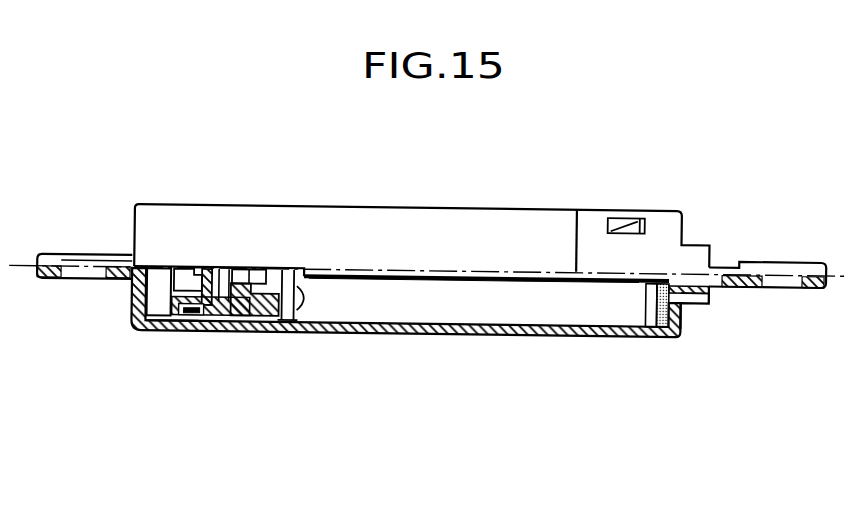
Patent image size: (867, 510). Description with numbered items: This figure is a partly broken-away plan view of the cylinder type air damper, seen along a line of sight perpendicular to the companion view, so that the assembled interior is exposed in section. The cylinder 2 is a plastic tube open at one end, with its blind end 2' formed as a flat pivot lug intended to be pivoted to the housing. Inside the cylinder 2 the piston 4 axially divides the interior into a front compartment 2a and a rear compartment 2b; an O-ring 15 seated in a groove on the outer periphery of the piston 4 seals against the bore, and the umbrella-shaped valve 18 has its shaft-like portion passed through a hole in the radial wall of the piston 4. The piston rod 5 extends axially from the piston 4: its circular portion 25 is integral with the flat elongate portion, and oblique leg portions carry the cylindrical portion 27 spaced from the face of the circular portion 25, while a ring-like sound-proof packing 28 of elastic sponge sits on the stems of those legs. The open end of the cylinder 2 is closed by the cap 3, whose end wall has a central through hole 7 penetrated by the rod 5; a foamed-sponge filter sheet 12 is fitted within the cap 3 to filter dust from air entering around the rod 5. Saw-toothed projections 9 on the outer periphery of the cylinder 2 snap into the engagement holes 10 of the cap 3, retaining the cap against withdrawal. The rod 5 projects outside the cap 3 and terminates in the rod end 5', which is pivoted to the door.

The cylinder 2 is at (421, 243).
The blind end 2' is at (76, 237).
The front compartment 2a is at (163, 330).
The rear compartment 2b is at (374, 297).
The cap 3 is at (682, 321).
The piston 4 is at (207, 319).
The piston rod 5 is at (478, 358).
The rod end 5' is at (768, 245).
The through hole 7 is at (717, 276).
The projections 9 is at (626, 209).
The engagement holes 10 is at (638, 208).
The filter sheet 12 is at (658, 323).
The O-ring 15 is at (190, 314).
The valve 18 is at (186, 267).
The circular portion 25 is at (305, 298).
The cylindrical portion 27 is at (236, 289).
The sound-proof packing 28 is at (283, 298).